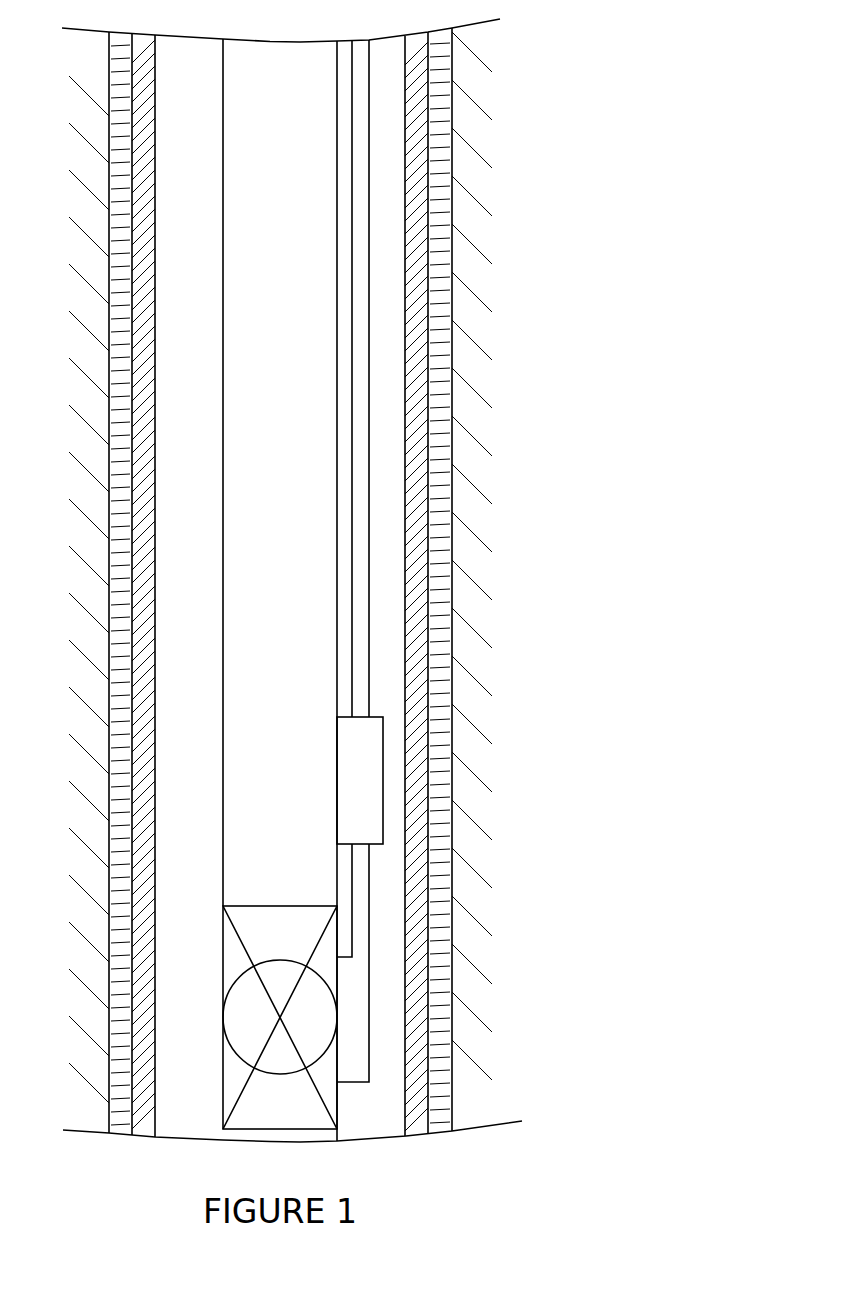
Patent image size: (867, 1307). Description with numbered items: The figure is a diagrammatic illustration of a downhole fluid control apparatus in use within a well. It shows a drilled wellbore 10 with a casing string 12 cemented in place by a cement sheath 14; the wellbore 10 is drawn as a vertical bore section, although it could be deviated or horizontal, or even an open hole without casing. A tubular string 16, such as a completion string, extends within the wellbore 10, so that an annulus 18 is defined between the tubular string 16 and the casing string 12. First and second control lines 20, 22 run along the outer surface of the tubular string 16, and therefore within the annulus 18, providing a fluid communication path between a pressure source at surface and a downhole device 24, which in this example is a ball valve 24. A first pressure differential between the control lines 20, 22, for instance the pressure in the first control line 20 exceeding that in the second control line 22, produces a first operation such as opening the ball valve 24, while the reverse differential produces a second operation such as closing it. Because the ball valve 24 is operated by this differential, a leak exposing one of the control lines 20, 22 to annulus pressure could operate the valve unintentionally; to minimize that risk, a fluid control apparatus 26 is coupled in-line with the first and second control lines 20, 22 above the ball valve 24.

The wellbore 10 is at (452, 143).
The casing string 12 is at (412, 240).
The cement sheath 14 is at (437, 320).
The tubular string 16 is at (223, 803).
The annulus 18 is at (190, 612).
The first control line 20 is at (352, 471).
The second control line 22 is at (370, 555).
The ball valve 24 is at (252, 1000).
The fluid control apparatus 26 is at (362, 771).